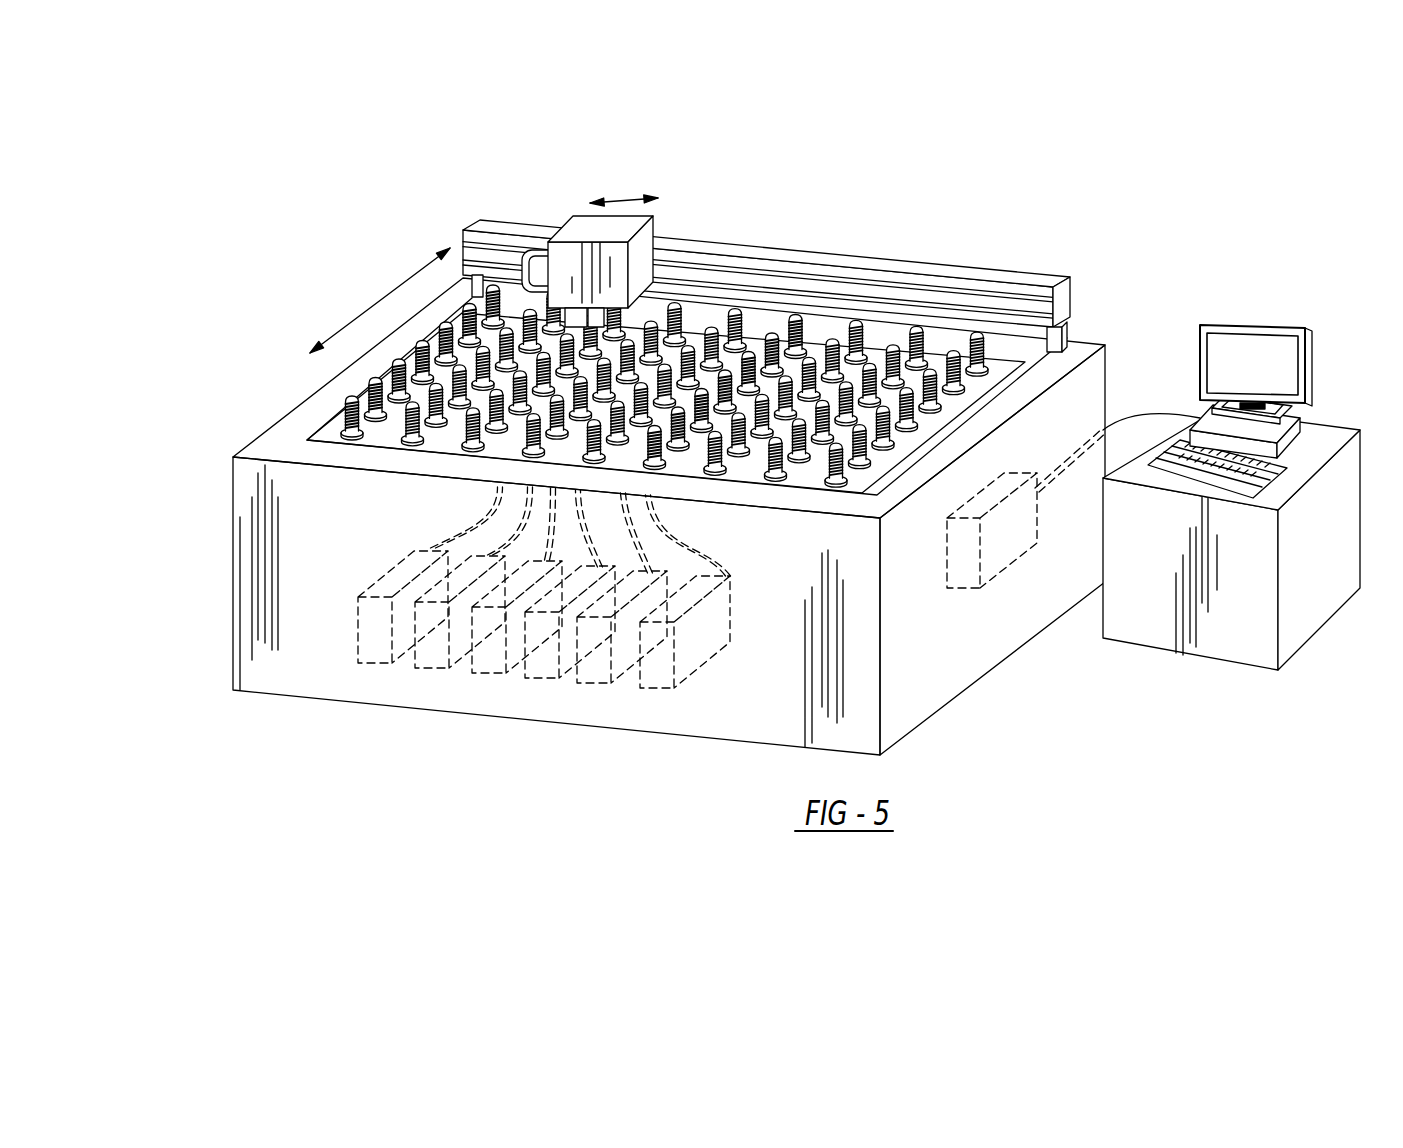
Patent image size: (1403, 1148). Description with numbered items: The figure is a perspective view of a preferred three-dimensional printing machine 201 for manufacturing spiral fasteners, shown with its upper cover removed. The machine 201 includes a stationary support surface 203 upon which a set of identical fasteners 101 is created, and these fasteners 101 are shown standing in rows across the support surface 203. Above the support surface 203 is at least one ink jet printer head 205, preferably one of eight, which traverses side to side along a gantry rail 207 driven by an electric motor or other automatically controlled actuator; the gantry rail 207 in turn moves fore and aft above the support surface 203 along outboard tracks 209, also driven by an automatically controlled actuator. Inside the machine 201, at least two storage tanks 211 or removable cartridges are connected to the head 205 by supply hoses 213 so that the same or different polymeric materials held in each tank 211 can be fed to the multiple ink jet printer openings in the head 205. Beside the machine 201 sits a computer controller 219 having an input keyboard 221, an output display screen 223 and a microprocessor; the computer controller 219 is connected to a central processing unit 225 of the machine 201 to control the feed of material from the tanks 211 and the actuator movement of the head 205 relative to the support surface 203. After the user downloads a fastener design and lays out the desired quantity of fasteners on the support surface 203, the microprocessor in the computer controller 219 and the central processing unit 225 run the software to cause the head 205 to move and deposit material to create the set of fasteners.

The fasteners 101 is at (343, 412).
The three-dimensional printing machine 201 is at (935, 657).
The stationary support surface 203 is at (382, 432).
The ink jet printer head 205 is at (637, 267).
The gantry rail 207 is at (862, 254).
The outboard tracks 209 is at (1017, 392).
The storage tanks 211 is at (375, 650).
The supply hoses 213 is at (733, 553).
The computer controller 219 is at (1300, 421).
The input keyboard 221 is at (1273, 483).
The output display screen 223 is at (1257, 352).
The central processing unit 225 is at (997, 558).